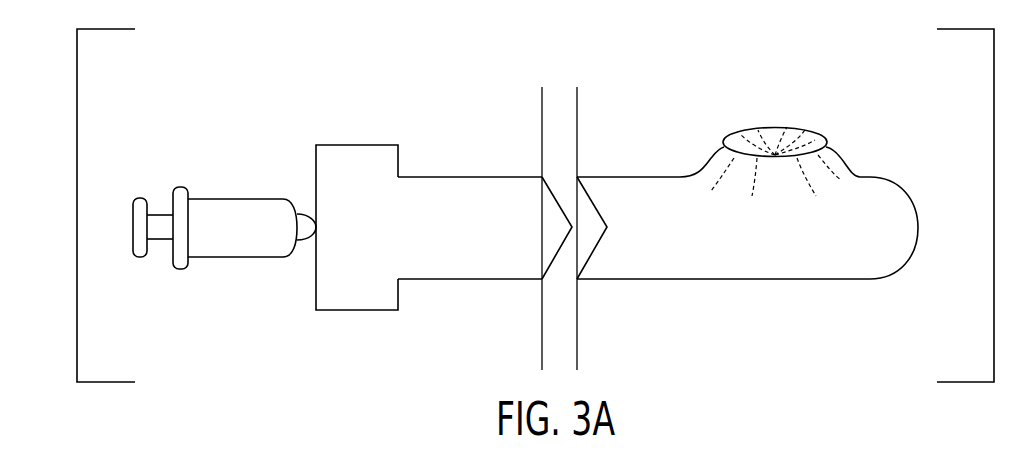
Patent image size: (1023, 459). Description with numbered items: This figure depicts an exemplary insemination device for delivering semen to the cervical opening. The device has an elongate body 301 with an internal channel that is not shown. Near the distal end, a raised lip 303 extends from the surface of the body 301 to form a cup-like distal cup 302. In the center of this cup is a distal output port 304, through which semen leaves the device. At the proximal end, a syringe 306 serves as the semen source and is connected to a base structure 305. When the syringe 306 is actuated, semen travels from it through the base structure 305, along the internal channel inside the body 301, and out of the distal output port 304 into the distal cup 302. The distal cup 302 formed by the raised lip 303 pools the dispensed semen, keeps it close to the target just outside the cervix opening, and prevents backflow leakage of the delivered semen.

The body 301 is at (676, 187).
The distal cup 302 is at (820, 130).
The raised lip 303 is at (747, 130).
The distal output port 304 is at (777, 153).
The base structure 305 is at (357, 155).
The syringe 306 is at (235, 212).